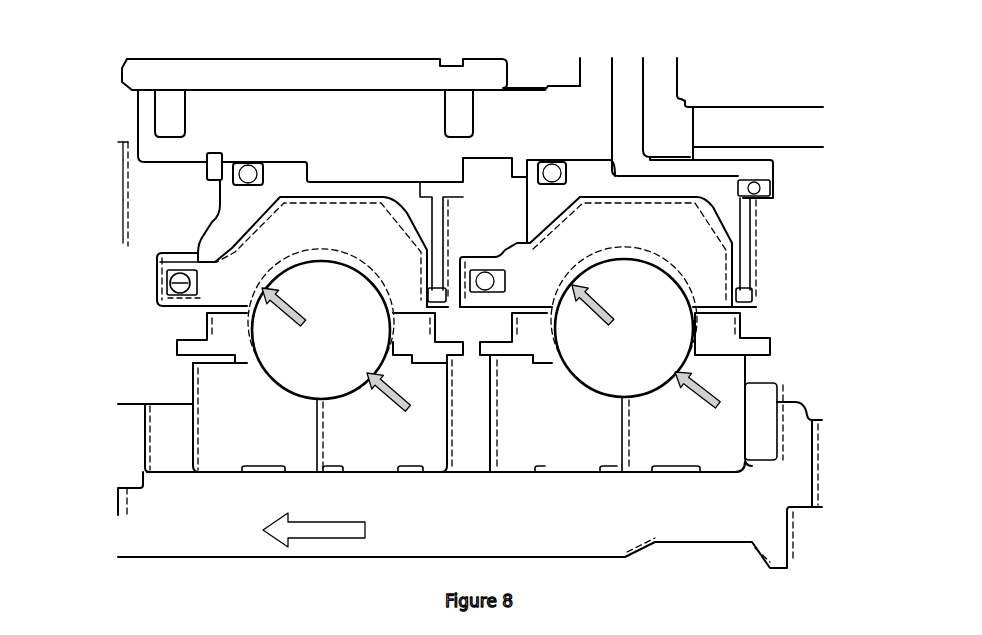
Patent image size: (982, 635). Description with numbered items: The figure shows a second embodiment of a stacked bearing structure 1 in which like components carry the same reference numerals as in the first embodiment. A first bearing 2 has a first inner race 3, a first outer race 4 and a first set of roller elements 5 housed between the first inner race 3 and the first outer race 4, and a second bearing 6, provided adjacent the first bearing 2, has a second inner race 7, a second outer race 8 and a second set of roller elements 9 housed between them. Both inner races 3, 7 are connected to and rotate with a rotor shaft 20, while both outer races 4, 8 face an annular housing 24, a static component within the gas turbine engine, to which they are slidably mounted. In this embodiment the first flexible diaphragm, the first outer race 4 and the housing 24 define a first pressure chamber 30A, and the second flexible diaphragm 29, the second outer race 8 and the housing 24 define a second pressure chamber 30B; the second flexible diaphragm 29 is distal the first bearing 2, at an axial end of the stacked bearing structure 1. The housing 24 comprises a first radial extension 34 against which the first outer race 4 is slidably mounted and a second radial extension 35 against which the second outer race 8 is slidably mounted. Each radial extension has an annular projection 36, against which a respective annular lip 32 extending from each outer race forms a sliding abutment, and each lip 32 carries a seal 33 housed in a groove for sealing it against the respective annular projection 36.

The stacked bearing structure 1 is at (743, 68).
The first bearing 2 is at (257, 482).
The first inner race 3 is at (217, 425).
The first outer race 4 is at (247, 216).
The first set of roller elements 5 is at (314, 347).
The second bearing 6 is at (638, 478).
The second inner race 7 is at (720, 422).
The second outer race 8 is at (697, 252).
The second set of roller elements 9 is at (617, 347).
The rotor shaft 20 is at (483, 529).
The annular housing 24 is at (240, 120).
The second flexible diaphragm 29 is at (752, 260).
The first pressure chamber 30A is at (410, 207).
The second pressure chamber 30B is at (717, 205).
The annular lip 32 is at (165, 303).
The seal 33 is at (175, 283).
The first radial extension 34 is at (187, 293).
The second radial extension 35 is at (225, 220).
The annular projection 36 is at (175, 262).